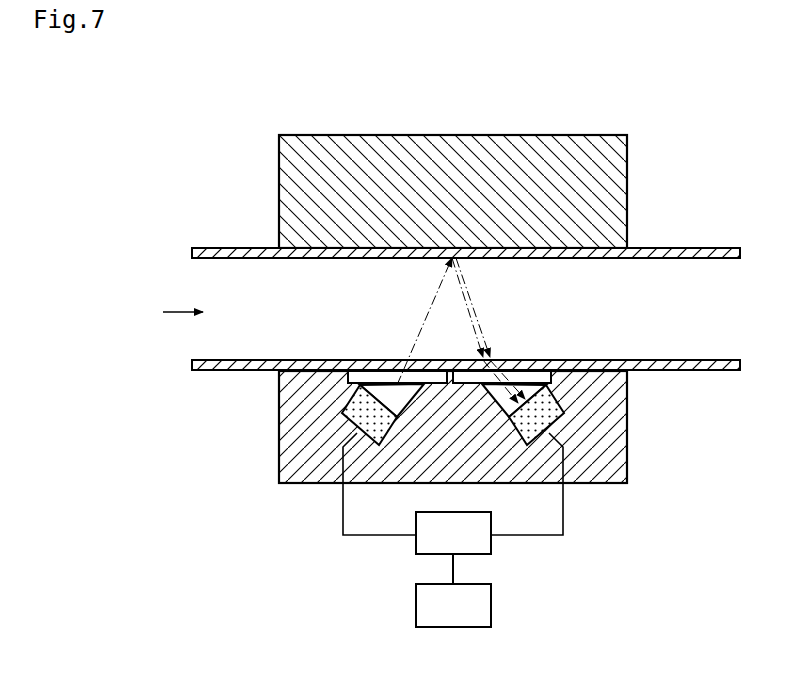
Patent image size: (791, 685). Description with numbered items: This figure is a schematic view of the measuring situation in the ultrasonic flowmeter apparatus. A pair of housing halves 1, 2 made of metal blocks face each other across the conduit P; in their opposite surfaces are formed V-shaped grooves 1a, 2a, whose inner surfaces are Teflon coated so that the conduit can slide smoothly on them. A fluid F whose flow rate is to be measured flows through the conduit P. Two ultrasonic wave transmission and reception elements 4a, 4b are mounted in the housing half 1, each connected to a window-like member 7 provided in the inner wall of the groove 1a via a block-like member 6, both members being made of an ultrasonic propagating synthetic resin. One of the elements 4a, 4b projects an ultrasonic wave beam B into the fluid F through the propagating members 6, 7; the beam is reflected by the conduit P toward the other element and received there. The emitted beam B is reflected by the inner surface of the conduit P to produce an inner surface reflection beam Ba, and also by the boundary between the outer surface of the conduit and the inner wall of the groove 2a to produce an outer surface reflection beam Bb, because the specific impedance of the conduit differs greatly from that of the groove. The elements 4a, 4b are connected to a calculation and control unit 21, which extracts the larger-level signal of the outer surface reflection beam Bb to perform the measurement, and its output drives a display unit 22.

The housing half 1 is at (615, 441).
The V-shaped groove 1a is at (323, 370).
The housing half 2 is at (545, 153).
The V-shaped groove 2a is at (337, 248).
The conduit P is at (704, 252).
The ultrasonic wave transmission and reception element 4a is at (362, 421).
The ultrasonic wave transmission and reception element 4b is at (550, 410).
The block-like member 6 is at (372, 392).
The window-like member 7 is at (366, 378).
The calculation and control unit 21 is at (478, 545).
The display unit 22 is at (478, 619).
The ultrasonic wave beam B is at (428, 320).
The inner surface reflection beam Ba is at (473, 327).
The outer surface reflection beam Bb is at (468, 290).
The fluid F is at (170, 310).